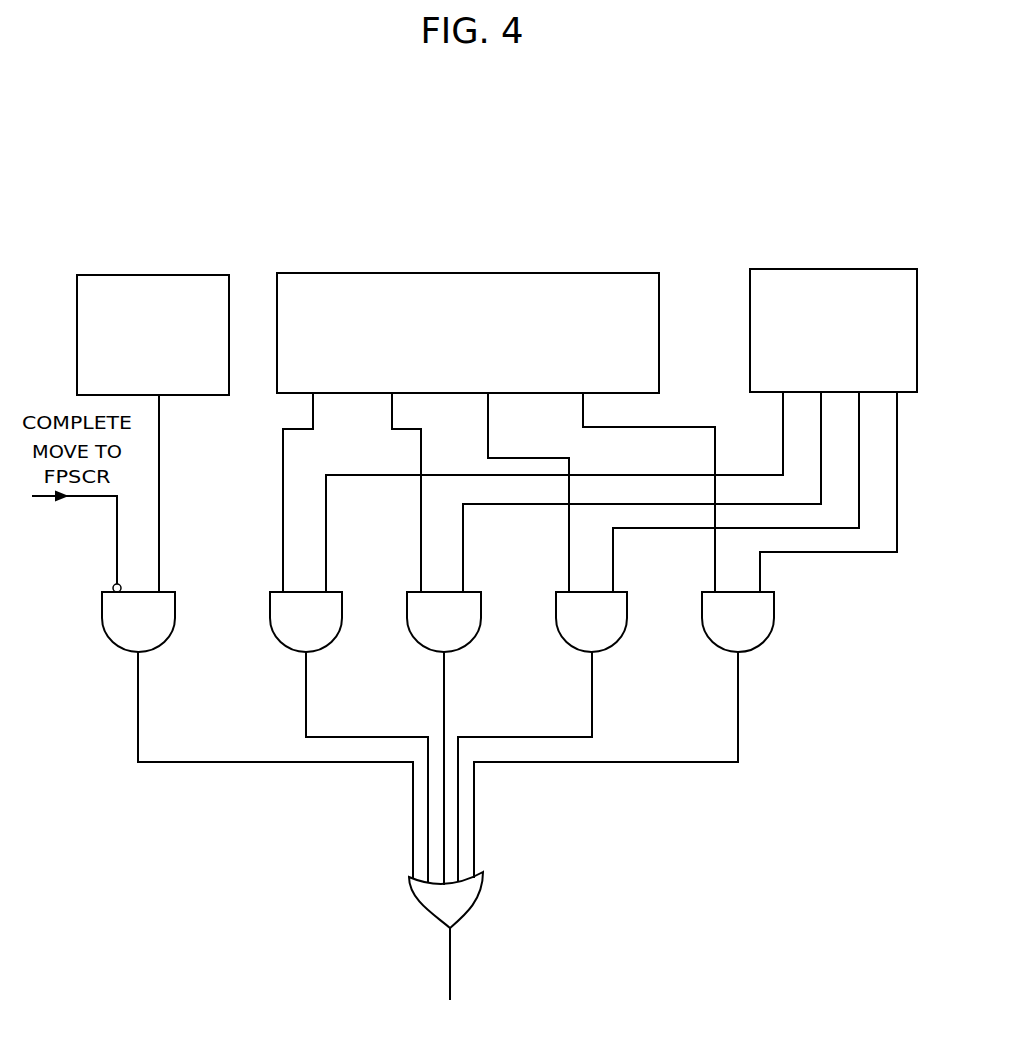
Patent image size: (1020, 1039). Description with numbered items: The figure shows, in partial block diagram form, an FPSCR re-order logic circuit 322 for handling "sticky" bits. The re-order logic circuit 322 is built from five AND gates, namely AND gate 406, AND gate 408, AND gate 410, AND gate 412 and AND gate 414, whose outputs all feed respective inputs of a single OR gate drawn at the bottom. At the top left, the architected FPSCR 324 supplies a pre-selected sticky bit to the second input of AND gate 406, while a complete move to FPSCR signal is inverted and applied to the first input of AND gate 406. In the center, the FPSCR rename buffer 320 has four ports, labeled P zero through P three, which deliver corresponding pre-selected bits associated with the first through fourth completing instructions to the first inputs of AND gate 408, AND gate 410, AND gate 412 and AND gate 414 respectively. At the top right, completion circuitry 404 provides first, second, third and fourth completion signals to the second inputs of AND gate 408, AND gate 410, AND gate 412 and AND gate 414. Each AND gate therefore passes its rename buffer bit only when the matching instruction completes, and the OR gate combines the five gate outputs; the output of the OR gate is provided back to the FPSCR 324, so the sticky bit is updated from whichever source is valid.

The FPSCR rename buffer 320 is at (613, 270).
The FPSCR re-order logic circuit 322 is at (683, 188).
The architected FPSCR 324 is at (183, 272).
The completion circuitry 404 is at (875, 267).
The AND gate 406 is at (122, 647).
The AND gate 408 is at (288, 647).
The AND gate 410 is at (422, 647).
The AND gate 412 is at (571, 647).
The AND gate 414 is at (718, 637).